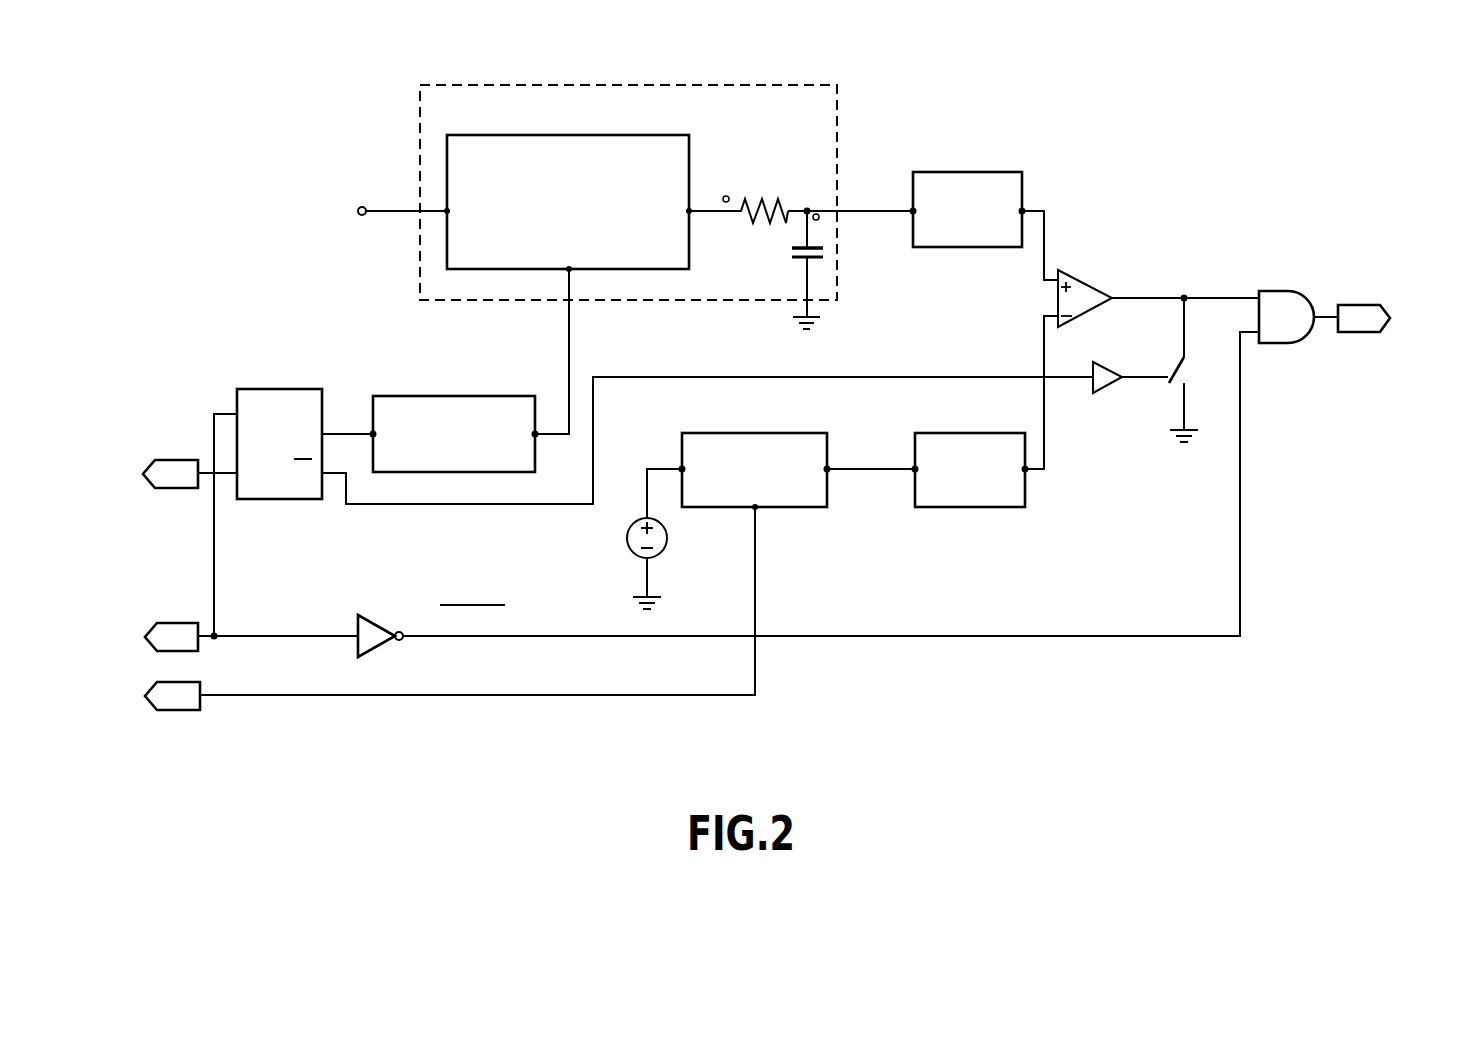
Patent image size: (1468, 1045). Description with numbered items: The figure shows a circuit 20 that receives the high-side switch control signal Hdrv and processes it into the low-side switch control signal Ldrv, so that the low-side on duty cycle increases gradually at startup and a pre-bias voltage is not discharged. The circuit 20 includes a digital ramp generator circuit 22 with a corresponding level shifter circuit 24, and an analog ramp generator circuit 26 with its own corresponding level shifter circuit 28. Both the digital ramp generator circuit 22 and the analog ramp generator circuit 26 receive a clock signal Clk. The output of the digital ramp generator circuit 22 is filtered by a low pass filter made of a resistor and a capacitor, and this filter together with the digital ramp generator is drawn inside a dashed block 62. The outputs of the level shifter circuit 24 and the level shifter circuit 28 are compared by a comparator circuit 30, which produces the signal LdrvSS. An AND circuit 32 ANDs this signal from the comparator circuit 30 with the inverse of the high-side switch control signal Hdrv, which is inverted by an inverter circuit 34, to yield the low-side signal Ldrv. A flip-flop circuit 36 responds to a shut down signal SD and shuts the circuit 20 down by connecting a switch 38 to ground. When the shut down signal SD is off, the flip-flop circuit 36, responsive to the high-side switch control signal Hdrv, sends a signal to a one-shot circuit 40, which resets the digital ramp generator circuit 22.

The circuit 20 is at (1120, 91).
The digital ramp generator circuit 22 is at (568, 134).
The level shifter circuit 24 is at (967, 171).
The analog ramp generator circuit 26 is at (797, 507).
The level shifter circuit 28 is at (963, 507).
The comparator circuit 30 is at (1075, 278).
The AND circuit 32 is at (1272, 290).
The inverter circuit 34 is at (380, 625).
The flip-flop circuit 36 is at (278, 388).
The switch 38 is at (1189, 373).
The one-shot circuit 40 is at (453, 395).
The digital ramp filter block 62 is at (782, 92).